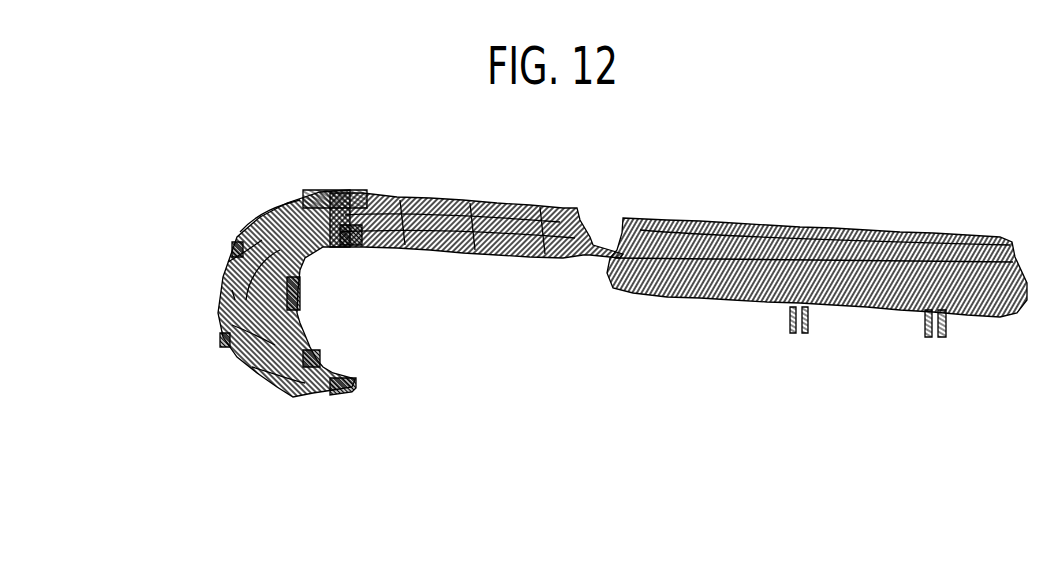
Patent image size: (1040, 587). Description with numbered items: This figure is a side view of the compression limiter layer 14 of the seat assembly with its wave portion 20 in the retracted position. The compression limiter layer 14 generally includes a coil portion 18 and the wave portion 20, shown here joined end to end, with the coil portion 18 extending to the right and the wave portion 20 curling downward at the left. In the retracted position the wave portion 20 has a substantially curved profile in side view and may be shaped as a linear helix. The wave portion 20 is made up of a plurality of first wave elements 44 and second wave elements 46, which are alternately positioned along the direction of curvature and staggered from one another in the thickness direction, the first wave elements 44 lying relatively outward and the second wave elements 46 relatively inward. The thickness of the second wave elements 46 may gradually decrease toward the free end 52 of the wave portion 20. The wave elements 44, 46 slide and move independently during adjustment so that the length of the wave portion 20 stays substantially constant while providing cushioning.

The compression limiter layer 14 is at (700, 215).
The coil portion 18 is at (500, 200).
The wave portion 20 is at (262, 217).
The first wave elements 44 is at (338, 190).
The second wave elements 46 is at (328, 245).
The free end 52 is at (352, 387).